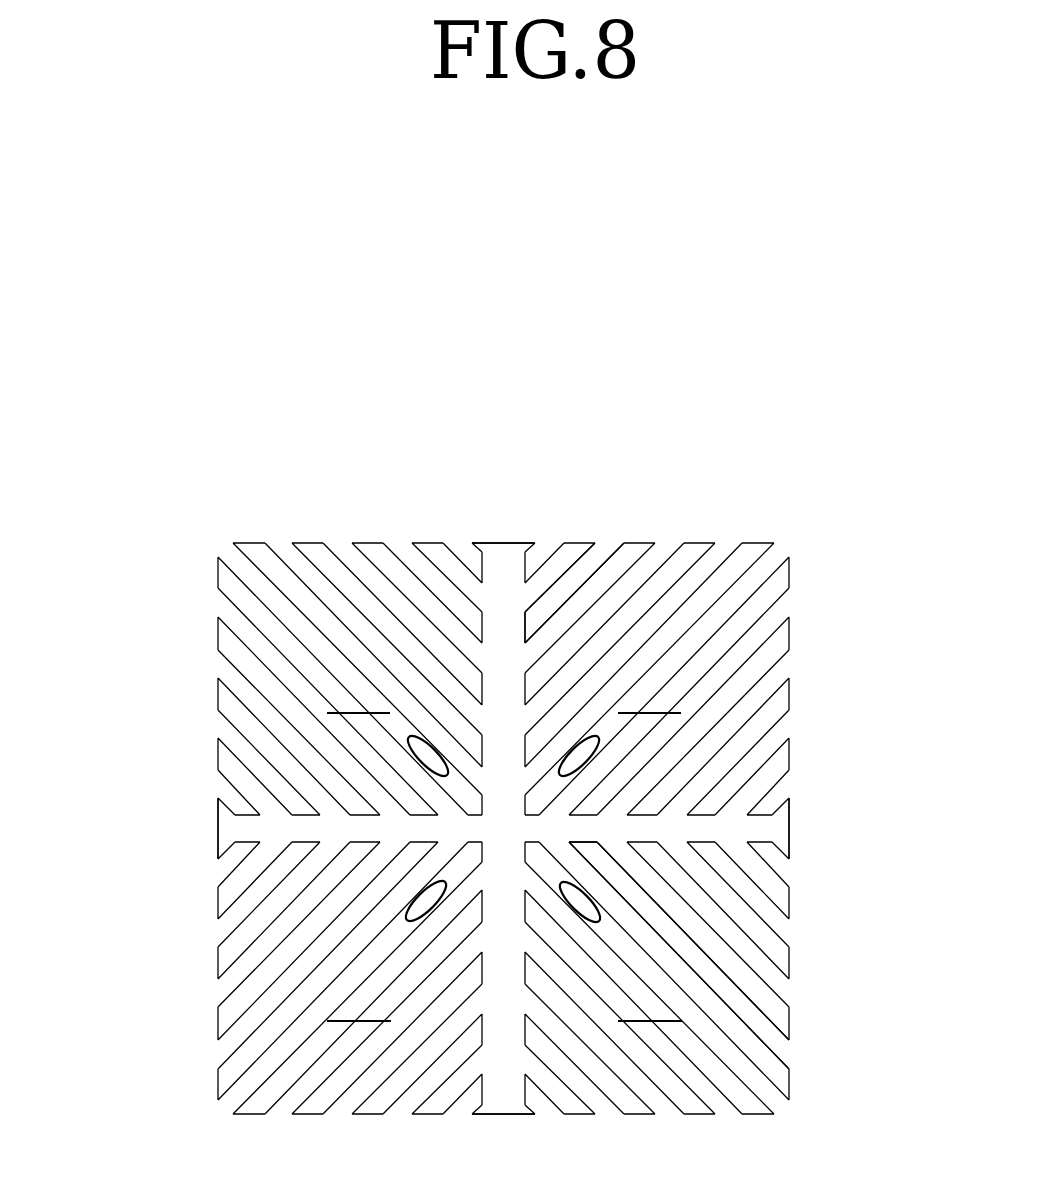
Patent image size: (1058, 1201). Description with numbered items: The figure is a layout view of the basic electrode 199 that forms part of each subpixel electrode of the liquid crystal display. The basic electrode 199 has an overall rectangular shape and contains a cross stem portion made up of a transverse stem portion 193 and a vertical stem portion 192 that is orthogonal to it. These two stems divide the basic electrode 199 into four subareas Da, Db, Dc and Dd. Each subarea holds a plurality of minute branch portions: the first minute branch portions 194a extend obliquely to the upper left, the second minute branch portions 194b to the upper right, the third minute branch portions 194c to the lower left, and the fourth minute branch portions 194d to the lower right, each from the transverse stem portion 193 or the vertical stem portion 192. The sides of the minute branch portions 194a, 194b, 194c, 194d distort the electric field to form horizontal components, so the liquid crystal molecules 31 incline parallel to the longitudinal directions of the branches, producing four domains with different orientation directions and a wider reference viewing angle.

The basic electrode 199 is at (501, 755).
The first minute branch portion 194a is at (380, 601).
The second minute branch portion 194b is at (715, 572).
The third minute branch portion 194c is at (282, 1033).
The fourth minute branch portion 194d is at (730, 1067).
The vertical stem portion 192 is at (525, 628).
The transverse stem portion 193 is at (582, 843).
The liquid crystal molecules 31 is at (580, 757).